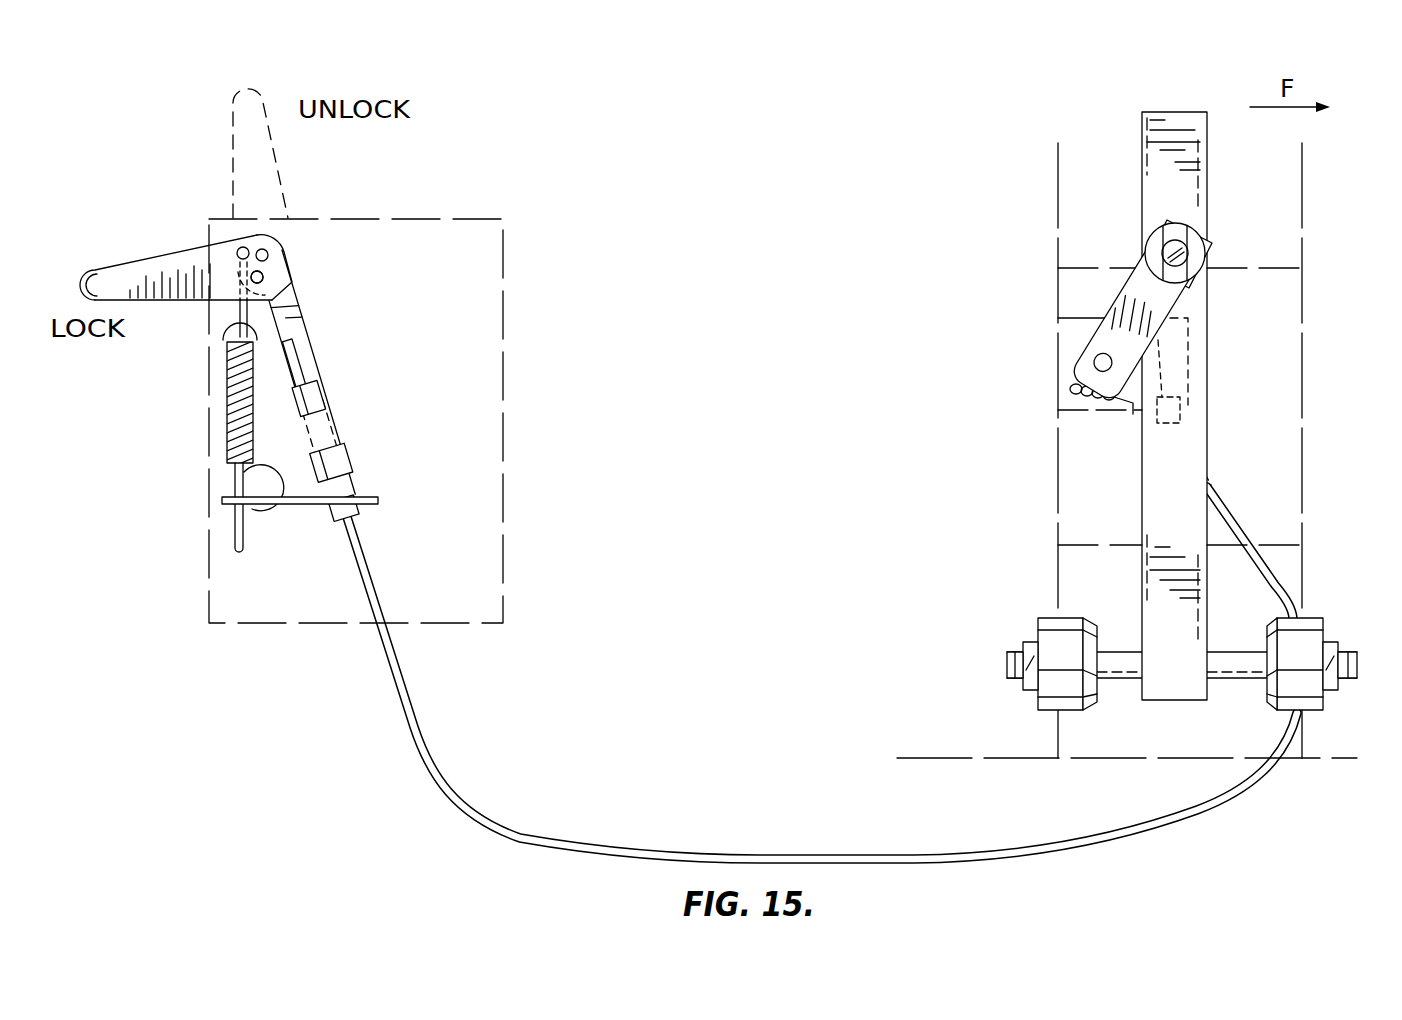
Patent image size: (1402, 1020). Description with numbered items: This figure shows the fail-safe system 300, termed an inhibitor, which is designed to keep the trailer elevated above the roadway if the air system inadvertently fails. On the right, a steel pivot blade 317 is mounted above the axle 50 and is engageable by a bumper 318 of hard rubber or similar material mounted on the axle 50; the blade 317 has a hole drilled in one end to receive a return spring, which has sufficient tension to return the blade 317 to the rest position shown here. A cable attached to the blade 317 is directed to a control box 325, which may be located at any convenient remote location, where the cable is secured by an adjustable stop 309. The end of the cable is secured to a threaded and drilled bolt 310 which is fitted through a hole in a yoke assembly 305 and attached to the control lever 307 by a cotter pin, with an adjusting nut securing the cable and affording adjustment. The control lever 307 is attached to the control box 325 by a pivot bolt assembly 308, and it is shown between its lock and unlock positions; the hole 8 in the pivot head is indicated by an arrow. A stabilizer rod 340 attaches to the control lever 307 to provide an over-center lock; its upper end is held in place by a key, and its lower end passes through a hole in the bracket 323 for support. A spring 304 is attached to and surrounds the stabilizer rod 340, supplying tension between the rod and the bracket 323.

The fail-safe system 300 is at (884, 163).
The control lever 307 is at (160, 250).
The pivot bolt assembly 308 is at (283, 234).
The control box 325 is at (446, 218).
The hole 8 is at (240, 287).
The yoke assembly 305 is at (303, 312).
The threaded and drilled bolt 310 is at (300, 360).
The spring 304 is at (227, 397).
The bracket 323 is at (372, 495).
The adjustable stop 309 is at (368, 512).
The stabilizer rod 340 is at (233, 530).
The bumper 318 is at (1155, 227).
The pivot blade 317 is at (1120, 292).
The axle 50 is at (1140, 470).